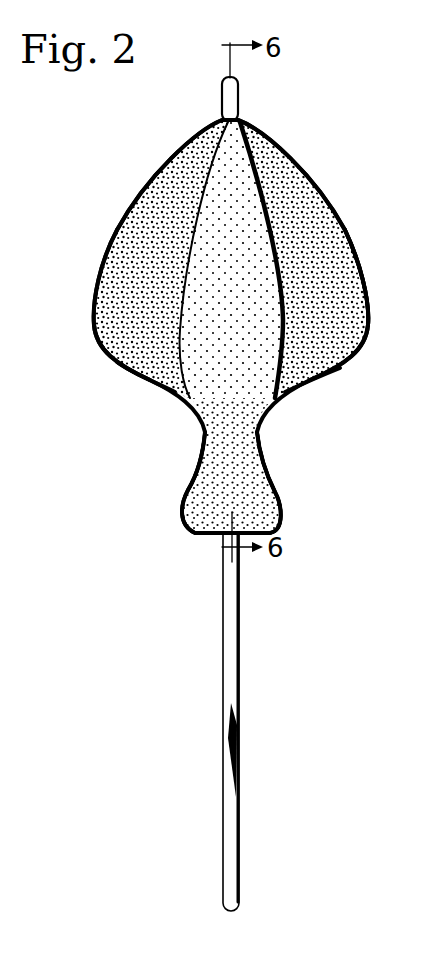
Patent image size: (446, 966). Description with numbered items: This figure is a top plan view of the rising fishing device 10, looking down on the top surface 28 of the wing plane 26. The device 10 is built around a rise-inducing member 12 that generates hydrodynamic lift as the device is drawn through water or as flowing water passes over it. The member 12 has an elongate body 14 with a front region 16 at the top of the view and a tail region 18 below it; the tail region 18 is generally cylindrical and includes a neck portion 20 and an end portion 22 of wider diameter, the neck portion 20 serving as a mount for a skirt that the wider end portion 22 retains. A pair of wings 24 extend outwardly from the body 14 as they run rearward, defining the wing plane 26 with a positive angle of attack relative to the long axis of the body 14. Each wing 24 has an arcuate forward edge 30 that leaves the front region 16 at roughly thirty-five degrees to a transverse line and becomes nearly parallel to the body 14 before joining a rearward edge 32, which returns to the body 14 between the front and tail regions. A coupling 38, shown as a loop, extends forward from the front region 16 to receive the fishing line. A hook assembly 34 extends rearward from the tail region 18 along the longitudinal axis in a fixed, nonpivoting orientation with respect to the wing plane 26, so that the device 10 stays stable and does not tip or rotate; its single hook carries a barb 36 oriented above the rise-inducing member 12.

The rising fishing device 10 is at (368, 103).
The rise-inducing member 12 is at (110, 208).
The elongate body 14 is at (200, 348).
The front region 16 is at (246, 112).
The tail region 18 is at (284, 493).
The neck portion 20 is at (262, 450).
The end portion 22 is at (190, 530).
The wings 24 is at (172, 155).
The wing plane 26 is at (341, 207).
The top surface 28 is at (122, 288).
The forward edge 30 is at (96, 317).
The rearward edge 32 is at (135, 376).
The hook assembly 34 is at (239, 632).
The barb 36 is at (240, 704).
The coupling 38 is at (220, 98).